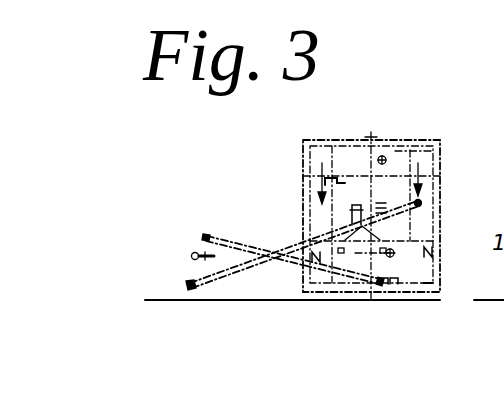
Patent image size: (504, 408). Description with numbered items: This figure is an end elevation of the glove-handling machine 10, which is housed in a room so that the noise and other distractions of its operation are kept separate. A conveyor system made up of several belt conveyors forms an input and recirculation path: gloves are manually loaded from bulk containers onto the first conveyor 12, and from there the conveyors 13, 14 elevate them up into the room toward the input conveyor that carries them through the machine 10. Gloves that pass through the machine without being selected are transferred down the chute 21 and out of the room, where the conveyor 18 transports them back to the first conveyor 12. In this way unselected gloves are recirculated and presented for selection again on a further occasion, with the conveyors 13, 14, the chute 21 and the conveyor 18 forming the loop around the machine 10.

The machine 10 is at (404, 138).
The first conveyor 12 is at (195, 252).
The conveyor 13 is at (214, 280).
The conveyor 14 is at (438, 178).
The conveyor 18 is at (228, 238).
The chute 21 is at (312, 196).